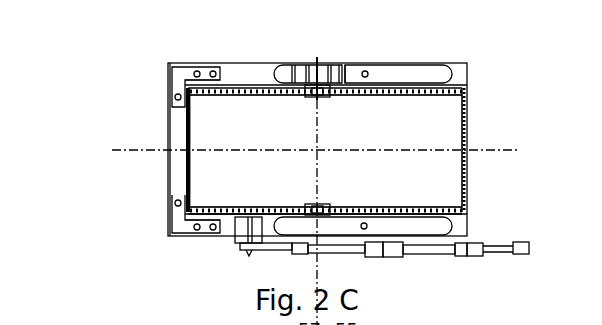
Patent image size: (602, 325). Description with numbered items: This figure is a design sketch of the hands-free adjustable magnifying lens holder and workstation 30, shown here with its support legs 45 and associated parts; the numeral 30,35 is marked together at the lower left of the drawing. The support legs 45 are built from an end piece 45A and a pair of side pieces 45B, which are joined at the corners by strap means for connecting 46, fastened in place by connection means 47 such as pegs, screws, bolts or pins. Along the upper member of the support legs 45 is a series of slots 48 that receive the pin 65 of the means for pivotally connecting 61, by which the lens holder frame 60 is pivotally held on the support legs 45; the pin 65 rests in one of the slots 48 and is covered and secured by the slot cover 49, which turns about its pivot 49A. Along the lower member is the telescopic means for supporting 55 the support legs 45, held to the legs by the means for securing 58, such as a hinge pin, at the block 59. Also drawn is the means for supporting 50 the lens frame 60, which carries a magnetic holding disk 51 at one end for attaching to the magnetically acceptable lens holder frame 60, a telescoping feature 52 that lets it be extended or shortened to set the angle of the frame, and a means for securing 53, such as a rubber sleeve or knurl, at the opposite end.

The hands-free adjustable magnifying lens holder and workstation 30 is at (79, 274).
The support frame 35 is at (125, 231).
The support legs 45 is at (166, 122).
The end piece of support legs 45A is at (177, 163).
The side pieces of support legs 45B is at (247, 73).
The strap means for connecting 46 is at (181, 75).
The connection means 47 is at (218, 68).
The series of slots 48 is at (297, 65).
The slot cover 49 is at (392, 75).
The pivot for slot cover 49A is at (366, 75).
The means for supporting the lens frame 50 is at (438, 248).
The magnetic holding disk 51 is at (392, 247).
The telescoping feature 52 is at (480, 245).
The means for securing 53 is at (523, 243).
The means for supporting the support legs 55 is at (353, 247).
The means for securing 58 is at (249, 258).
The block 59 is at (241, 240).
The lens holder frame 60 is at (446, 88).
The means for pivotally connecting 61 is at (347, 83).
The pin 65 is at (318, 83).